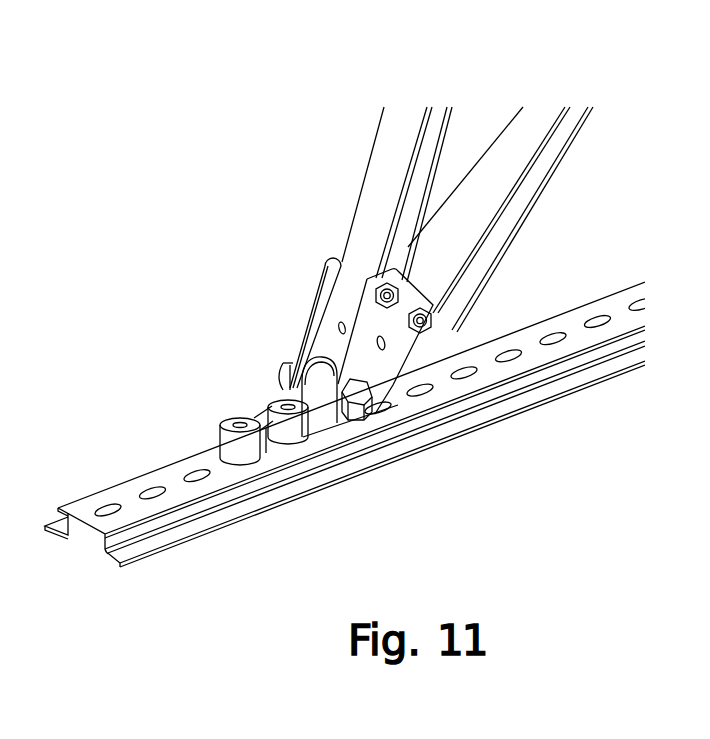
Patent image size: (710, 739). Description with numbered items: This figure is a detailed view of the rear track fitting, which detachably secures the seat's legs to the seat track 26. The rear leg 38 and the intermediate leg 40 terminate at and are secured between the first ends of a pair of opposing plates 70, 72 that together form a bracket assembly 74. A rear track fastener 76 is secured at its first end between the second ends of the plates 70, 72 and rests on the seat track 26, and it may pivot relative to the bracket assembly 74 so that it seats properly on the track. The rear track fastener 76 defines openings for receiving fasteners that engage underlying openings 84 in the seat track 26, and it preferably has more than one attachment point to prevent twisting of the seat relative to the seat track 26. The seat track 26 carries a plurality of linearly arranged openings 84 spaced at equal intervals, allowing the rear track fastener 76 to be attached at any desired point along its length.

The seat track 26 is at (458, 388).
The rear leg 38 is at (392, 157).
The intermediate leg 40 is at (507, 157).
The plate 70 is at (337, 294).
The plate 72 is at (405, 348).
The bracket assembly 74 is at (268, 319).
The rear track fastener 76 is at (276, 437).
The openings 84 is at (601, 327).